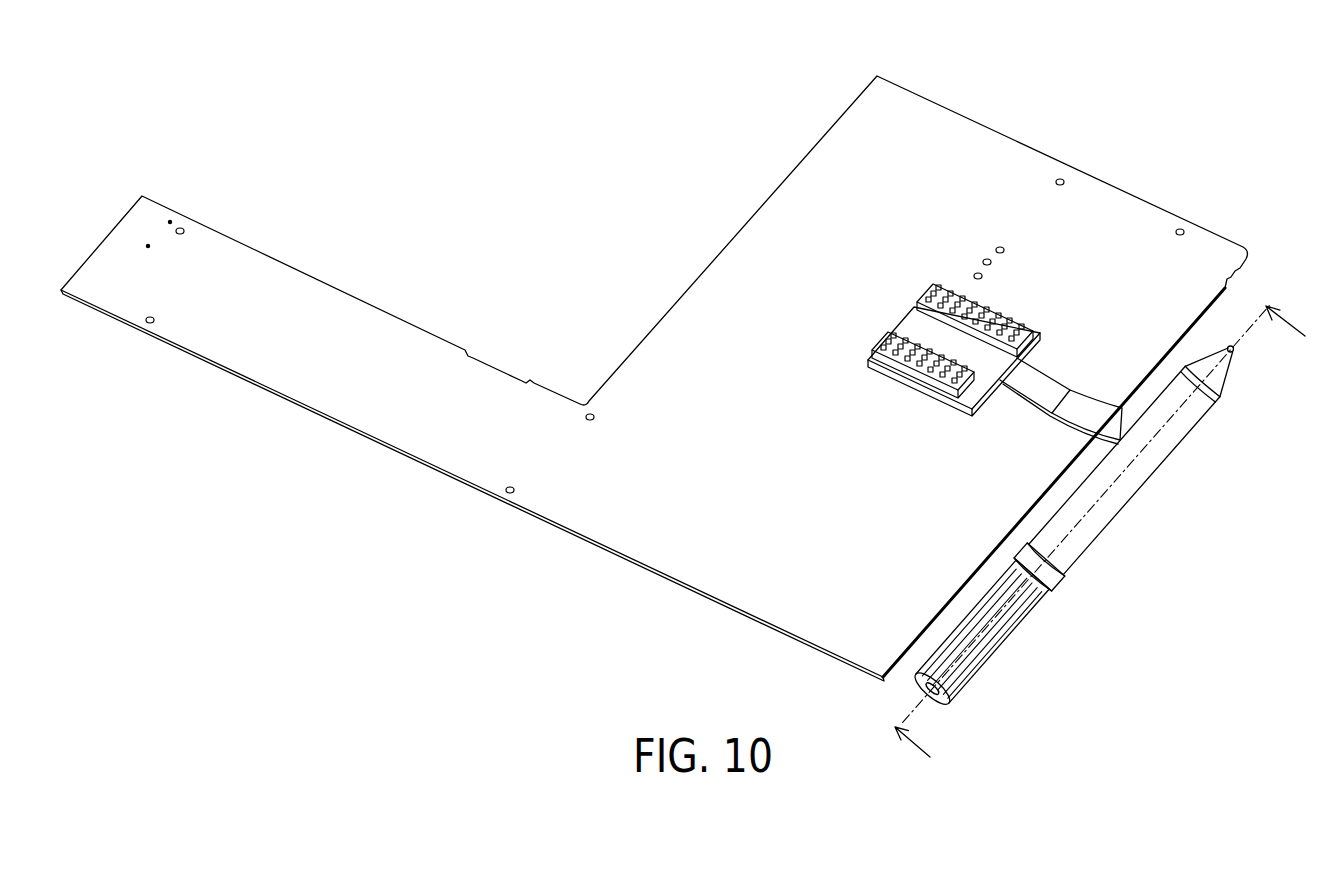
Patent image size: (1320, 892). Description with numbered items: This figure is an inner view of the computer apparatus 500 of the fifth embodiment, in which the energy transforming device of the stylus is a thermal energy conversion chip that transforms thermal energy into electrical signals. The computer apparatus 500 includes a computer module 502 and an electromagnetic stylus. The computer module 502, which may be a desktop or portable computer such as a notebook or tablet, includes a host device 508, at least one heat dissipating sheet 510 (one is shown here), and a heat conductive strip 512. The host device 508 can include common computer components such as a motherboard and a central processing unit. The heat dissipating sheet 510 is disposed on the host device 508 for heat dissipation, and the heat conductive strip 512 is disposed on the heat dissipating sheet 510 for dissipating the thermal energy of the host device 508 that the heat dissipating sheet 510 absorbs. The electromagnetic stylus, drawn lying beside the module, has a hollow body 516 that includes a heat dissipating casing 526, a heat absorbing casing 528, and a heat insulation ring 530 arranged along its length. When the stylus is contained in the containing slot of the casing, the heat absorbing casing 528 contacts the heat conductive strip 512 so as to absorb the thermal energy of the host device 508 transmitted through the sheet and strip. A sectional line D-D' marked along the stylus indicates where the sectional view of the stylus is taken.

The computer apparatus 500 is at (612, 90).
The computer module 502 is at (1232, 177).
The host device 508 is at (943, 120).
The heat dissipating sheet 510 is at (992, 308).
The heat conductive strip 512 is at (1057, 372).
The hollow body 516 is at (1190, 574).
The heat dissipating casing 526 is at (1003, 640).
The heat absorbing casing 528 is at (1090, 530).
The heat insulation ring 530 is at (1035, 580).